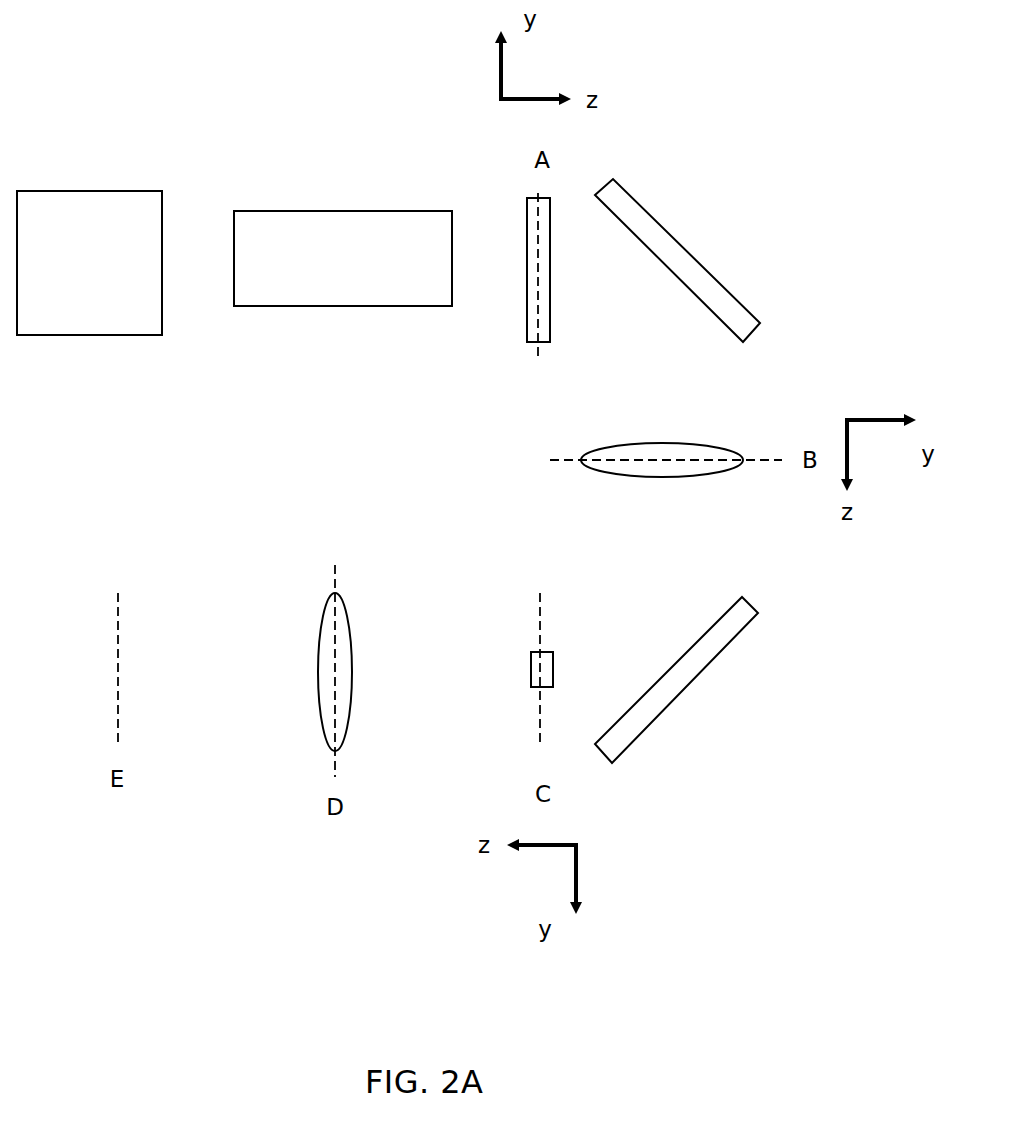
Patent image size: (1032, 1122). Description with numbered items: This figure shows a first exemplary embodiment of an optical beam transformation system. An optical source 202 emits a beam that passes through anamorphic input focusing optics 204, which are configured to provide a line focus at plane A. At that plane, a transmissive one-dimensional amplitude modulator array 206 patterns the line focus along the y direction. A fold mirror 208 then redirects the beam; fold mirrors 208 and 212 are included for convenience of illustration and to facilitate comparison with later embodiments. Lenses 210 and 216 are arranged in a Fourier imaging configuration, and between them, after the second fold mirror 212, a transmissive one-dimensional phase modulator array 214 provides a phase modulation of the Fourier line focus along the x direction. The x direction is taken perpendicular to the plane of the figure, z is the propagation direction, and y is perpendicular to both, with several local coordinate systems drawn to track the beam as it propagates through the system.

The optical source 202 is at (64, 274).
The anamorphic input focusing optics 204 is at (370, 274).
The transmissive 1-D amplitude modulator array 206 is at (530, 332).
The fold mirror 208 is at (673, 257).
The lens 210 is at (662, 470).
The fold mirror 212 is at (688, 677).
The transmissive 1-D phase modulator array 214 is at (530, 672).
The lens 216 is at (327, 627).